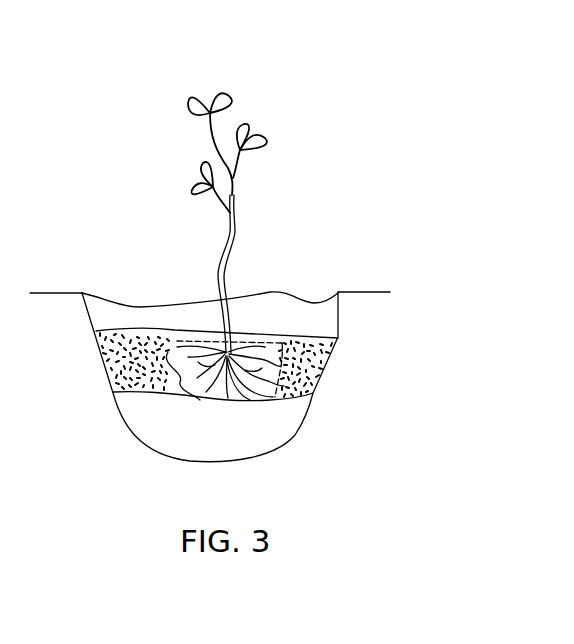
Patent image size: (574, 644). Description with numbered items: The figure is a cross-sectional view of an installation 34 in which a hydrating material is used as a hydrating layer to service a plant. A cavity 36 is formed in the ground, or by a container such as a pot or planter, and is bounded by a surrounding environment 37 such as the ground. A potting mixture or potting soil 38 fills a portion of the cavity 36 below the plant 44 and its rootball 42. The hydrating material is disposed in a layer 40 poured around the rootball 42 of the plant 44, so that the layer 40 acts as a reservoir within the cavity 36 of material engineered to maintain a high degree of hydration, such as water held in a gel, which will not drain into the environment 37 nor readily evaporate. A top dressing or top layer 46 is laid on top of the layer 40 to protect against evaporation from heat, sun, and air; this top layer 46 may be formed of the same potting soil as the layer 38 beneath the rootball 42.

The installation 34 is at (275, 62).
The cavity 36 is at (106, 412).
The surrounding environment 37 is at (362, 292).
The potting soil 38 is at (292, 422).
The layer 40 is at (320, 360).
The rootball 42 is at (200, 391).
The plant 44 is at (237, 243).
The top layer 46 is at (330, 317).